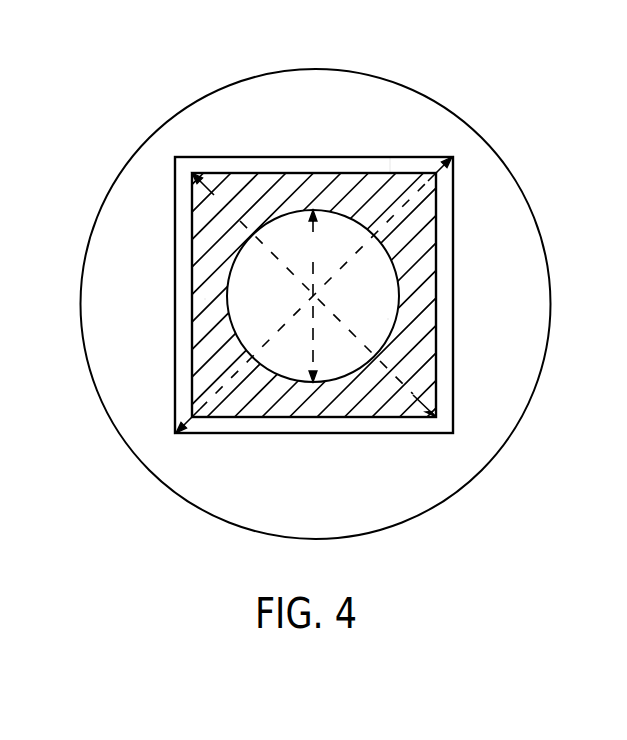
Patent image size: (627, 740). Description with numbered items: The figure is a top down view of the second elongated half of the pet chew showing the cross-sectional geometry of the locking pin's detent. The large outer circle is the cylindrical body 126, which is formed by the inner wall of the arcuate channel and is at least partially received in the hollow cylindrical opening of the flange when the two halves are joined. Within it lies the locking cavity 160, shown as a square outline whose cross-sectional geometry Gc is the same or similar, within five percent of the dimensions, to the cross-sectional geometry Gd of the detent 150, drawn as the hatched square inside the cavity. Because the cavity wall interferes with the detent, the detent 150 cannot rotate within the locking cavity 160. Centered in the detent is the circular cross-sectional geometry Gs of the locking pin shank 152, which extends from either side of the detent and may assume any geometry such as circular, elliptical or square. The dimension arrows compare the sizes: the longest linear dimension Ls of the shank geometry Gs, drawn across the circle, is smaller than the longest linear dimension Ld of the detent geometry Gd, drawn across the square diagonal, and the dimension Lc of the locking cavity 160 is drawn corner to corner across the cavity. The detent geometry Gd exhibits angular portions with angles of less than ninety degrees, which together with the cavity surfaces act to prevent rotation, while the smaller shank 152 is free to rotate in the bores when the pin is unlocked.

The cylindrical body 126 is at (241, 97).
The locking cavity 160 is at (311, 157).
The detent 150 is at (193, 233).
The locking pin shank 152 is at (388, 287).
The longest linear dimension of the shank cross-sectional geometry Ls is at (314, 296).
The longest linear dimension of the detent cross-sectional geometry Ld is at (314, 295).
The linear dimension of the locking cavity cross-sectional geometry Lc is at (314, 295).
The cross-sectional geometry of the locking cavity Gc is at (390, 172).
The cross-sectional geometry of the detent Gd is at (205, 298).
The cross-sectional geometry of the locking pin shank Gs is at (388, 318).